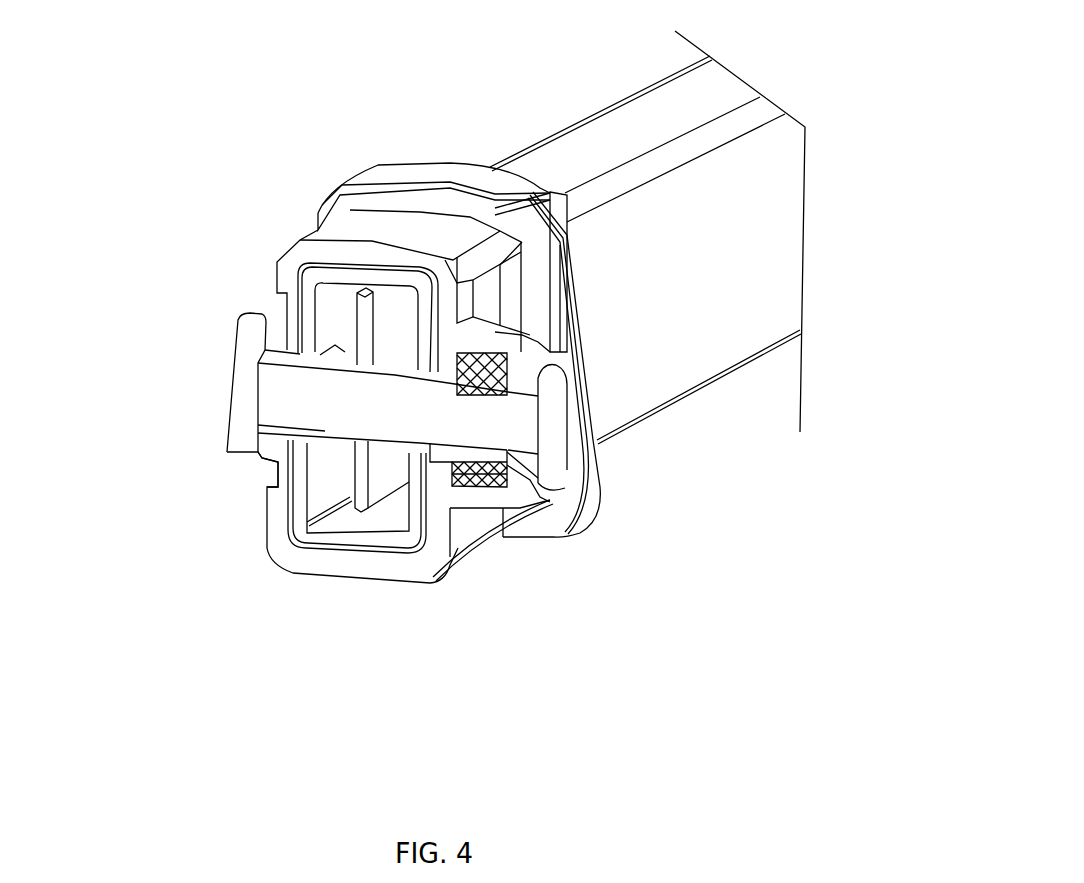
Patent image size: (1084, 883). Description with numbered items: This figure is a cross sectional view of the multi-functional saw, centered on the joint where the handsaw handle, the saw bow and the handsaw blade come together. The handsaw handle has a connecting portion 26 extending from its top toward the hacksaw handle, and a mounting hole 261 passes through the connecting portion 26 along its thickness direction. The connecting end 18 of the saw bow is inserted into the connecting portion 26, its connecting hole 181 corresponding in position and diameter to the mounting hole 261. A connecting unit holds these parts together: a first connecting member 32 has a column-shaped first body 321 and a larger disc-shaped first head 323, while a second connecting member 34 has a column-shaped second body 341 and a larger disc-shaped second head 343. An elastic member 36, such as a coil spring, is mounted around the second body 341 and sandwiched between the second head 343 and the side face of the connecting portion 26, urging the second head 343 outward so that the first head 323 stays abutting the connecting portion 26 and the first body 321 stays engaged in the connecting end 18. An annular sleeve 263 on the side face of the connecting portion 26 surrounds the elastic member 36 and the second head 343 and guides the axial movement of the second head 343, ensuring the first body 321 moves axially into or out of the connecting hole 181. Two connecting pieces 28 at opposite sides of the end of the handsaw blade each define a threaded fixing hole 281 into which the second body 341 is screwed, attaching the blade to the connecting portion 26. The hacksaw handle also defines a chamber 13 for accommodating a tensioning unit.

The chamber 13 is at (280, 460).
The connecting end 18 is at (365, 533).
The connecting hole 181 is at (437, 500).
The connecting portion 26 is at (322, 558).
The mounting hole 261 is at (458, 478).
The annular sleeve 263 is at (517, 340).
The connecting piece 28 is at (400, 325).
The fixing hole 281 is at (355, 355).
The first connecting member 32 is at (285, 349).
The first body 321 is at (290, 428).
The first head 323 is at (242, 358).
The second connecting member 34 is at (680, 552).
The second body 341 is at (507, 453).
The second head 343 is at (510, 420).
The elastic member 36 is at (472, 362).